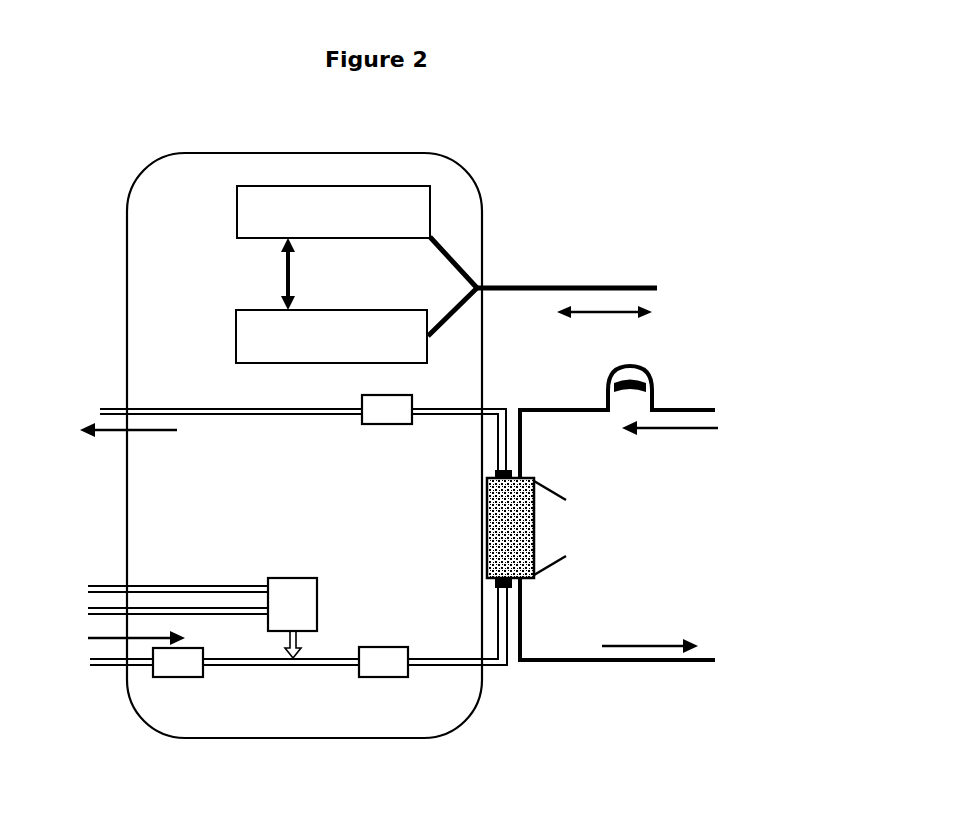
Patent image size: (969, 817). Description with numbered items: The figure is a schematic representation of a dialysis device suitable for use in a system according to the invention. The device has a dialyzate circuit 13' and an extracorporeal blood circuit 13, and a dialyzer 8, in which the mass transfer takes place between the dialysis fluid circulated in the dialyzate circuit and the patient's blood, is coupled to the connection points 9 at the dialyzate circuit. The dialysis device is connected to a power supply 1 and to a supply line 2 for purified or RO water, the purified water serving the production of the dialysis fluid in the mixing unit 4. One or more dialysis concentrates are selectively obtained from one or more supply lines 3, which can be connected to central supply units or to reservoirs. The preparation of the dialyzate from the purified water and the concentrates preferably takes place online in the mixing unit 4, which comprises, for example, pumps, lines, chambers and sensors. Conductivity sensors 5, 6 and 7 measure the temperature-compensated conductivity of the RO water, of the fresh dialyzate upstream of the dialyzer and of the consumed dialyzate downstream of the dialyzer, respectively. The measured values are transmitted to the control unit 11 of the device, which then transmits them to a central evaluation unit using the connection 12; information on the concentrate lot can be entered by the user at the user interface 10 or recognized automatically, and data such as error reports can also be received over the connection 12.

The power supply 1 is at (148, 258).
The supply line 2 is at (106, 663).
The supply lines 3 is at (148, 590).
The mixing unit 4 is at (293, 588).
The conductivity sensor 5 is at (179, 693).
The conductivity sensor 6 is at (384, 629).
The conductivity sensor 7 is at (385, 440).
The dialyzer 8 is at (481, 529).
The connection points 9 is at (566, 528).
The user interface 10 is at (333, 210).
The control unit 11 is at (331, 337).
The connection 12 is at (542, 283).
The extracorporeal blood circuit 13 is at (619, 513).
The dialyzate circuit 13' is at (293, 492).